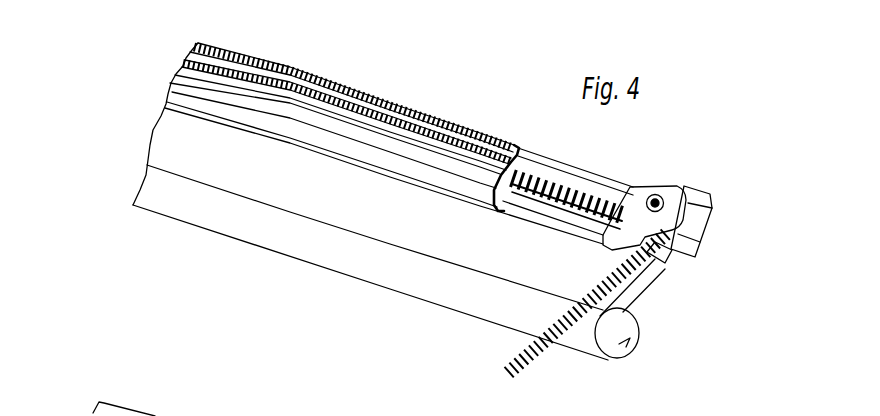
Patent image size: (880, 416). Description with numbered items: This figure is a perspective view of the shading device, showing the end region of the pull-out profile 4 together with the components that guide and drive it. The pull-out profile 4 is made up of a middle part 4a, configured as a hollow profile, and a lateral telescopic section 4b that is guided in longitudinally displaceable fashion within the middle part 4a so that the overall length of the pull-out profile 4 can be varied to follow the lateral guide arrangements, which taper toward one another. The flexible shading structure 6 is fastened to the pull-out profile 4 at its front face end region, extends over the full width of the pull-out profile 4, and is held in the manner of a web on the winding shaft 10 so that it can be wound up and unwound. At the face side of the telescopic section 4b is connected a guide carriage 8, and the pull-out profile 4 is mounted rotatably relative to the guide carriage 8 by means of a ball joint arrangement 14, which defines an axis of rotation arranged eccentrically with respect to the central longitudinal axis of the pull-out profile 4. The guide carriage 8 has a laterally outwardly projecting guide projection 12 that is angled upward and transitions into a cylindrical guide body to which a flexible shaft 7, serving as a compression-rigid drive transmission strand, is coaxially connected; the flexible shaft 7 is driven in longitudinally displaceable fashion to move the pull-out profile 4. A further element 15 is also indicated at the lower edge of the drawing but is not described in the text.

The pull-out profile 4 is at (397, 78).
The middle part 4a is at (421, 113).
The telescopic section 4b is at (573, 176).
The shading structure 6 is at (424, 227).
The flexible shaft 7 is at (506, 361).
The guide carriage 8 is at (690, 178).
The winding shaft 10 is at (642, 333).
The guide projection 12 is at (684, 231).
The ball joint arrangement 14 is at (657, 194).
The rail 15 is at (227, 409).